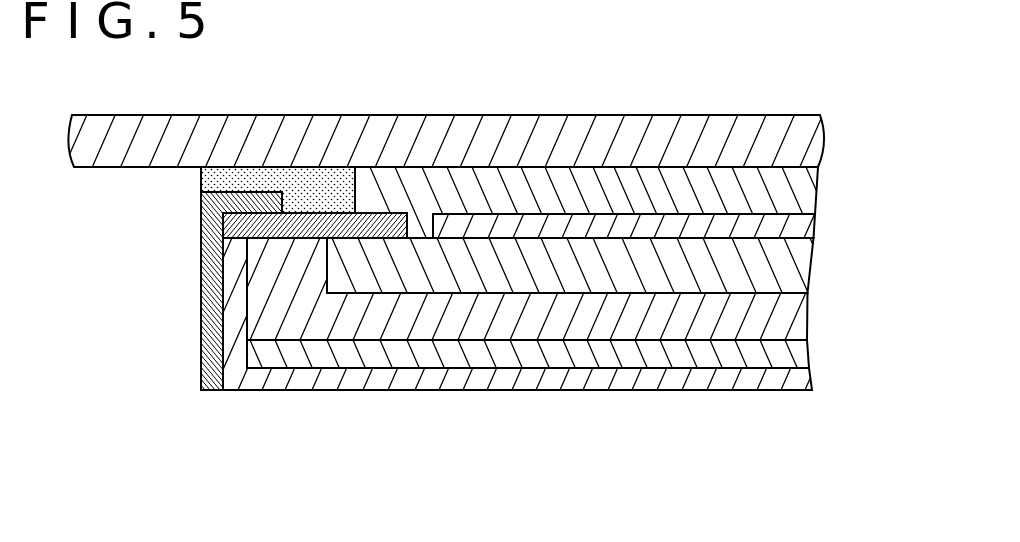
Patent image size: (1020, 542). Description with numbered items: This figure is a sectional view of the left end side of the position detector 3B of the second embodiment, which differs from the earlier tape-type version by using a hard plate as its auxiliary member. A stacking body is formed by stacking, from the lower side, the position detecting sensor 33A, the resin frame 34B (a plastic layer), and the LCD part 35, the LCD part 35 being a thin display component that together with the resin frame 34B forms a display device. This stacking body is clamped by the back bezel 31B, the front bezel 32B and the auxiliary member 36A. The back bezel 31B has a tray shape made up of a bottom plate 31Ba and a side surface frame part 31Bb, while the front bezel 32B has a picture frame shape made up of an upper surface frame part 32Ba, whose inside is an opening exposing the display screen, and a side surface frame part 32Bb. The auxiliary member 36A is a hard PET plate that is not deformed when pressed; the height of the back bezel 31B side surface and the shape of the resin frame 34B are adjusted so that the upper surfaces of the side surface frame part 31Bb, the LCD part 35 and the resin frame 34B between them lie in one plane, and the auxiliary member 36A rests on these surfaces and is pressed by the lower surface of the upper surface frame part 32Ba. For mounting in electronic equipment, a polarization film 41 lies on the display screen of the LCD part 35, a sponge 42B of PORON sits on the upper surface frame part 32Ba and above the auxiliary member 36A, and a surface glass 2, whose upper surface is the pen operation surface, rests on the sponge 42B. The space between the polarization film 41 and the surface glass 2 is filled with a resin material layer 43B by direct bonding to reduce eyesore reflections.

The surface glass 2 is at (435, 122).
The position detector 3B is at (463, 291).
The back bezel 31B is at (518, 376).
The bottom plate 31Ba is at (517, 413).
The side surface frame part 31Bb is at (235, 342).
The front bezel 32B is at (218, 291).
The upper surface frame part 32Ba is at (238, 206).
The side surface frame part 32Bb is at (205, 298).
The position detecting sensor 33A is at (798, 355).
The resin frame 34B is at (803, 310).
The LCD part 35 is at (805, 259).
The auxiliary member 36A is at (304, 212).
The polarization film 41 is at (808, 228).
The sponge 42B is at (200, 180).
The resin material layer 43B is at (812, 192).